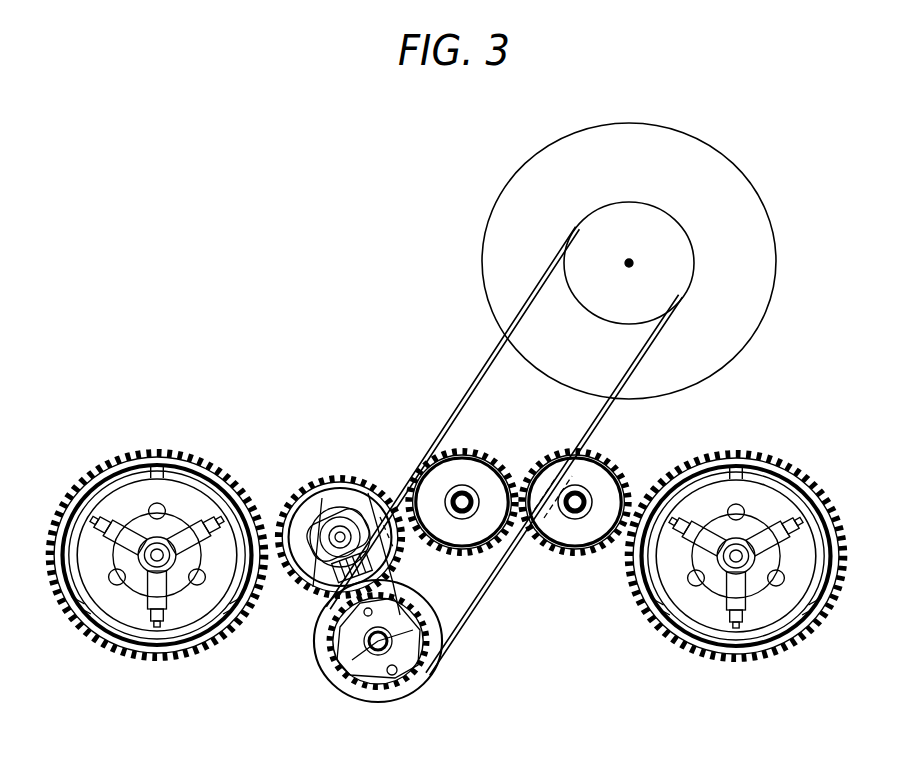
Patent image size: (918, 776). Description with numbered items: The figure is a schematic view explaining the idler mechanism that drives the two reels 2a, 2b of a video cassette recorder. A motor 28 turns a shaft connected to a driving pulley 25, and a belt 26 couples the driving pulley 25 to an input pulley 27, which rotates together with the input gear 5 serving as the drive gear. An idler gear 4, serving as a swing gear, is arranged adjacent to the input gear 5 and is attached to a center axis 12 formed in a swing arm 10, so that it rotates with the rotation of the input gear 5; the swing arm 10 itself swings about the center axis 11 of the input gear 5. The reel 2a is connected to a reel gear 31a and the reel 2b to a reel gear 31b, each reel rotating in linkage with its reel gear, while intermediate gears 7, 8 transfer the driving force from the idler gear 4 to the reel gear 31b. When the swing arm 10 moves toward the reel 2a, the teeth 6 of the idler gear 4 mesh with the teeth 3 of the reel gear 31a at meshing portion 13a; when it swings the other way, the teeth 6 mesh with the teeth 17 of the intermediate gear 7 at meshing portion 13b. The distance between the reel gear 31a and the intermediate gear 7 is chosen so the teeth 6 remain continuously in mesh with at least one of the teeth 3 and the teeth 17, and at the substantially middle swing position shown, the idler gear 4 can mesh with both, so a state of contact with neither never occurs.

The reel 2a is at (158, 548).
The reel 2b is at (735, 548).
The teeth 3 is at (193, 455).
The idler gear 4 is at (357, 500).
The input gear 5 is at (423, 673).
The teeth 6 is at (340, 478).
The intermediate gear 7 is at (468, 477).
The intermediate gear 8 is at (596, 483).
The swing arm 10 is at (450, 645).
The center axis 11 is at (350, 672).
The center axis 12 is at (331, 533).
The meshing portion 13a is at (272, 506).
The meshing portion 13b is at (398, 490).
The teeth 17 is at (509, 470).
The driving pulley 25 is at (663, 263).
The belt 26 is at (655, 330).
The input pulley 27 is at (331, 659).
The motor 28 is at (688, 357).
The reel gear 31a is at (103, 515).
The reel gear 31b is at (790, 515).